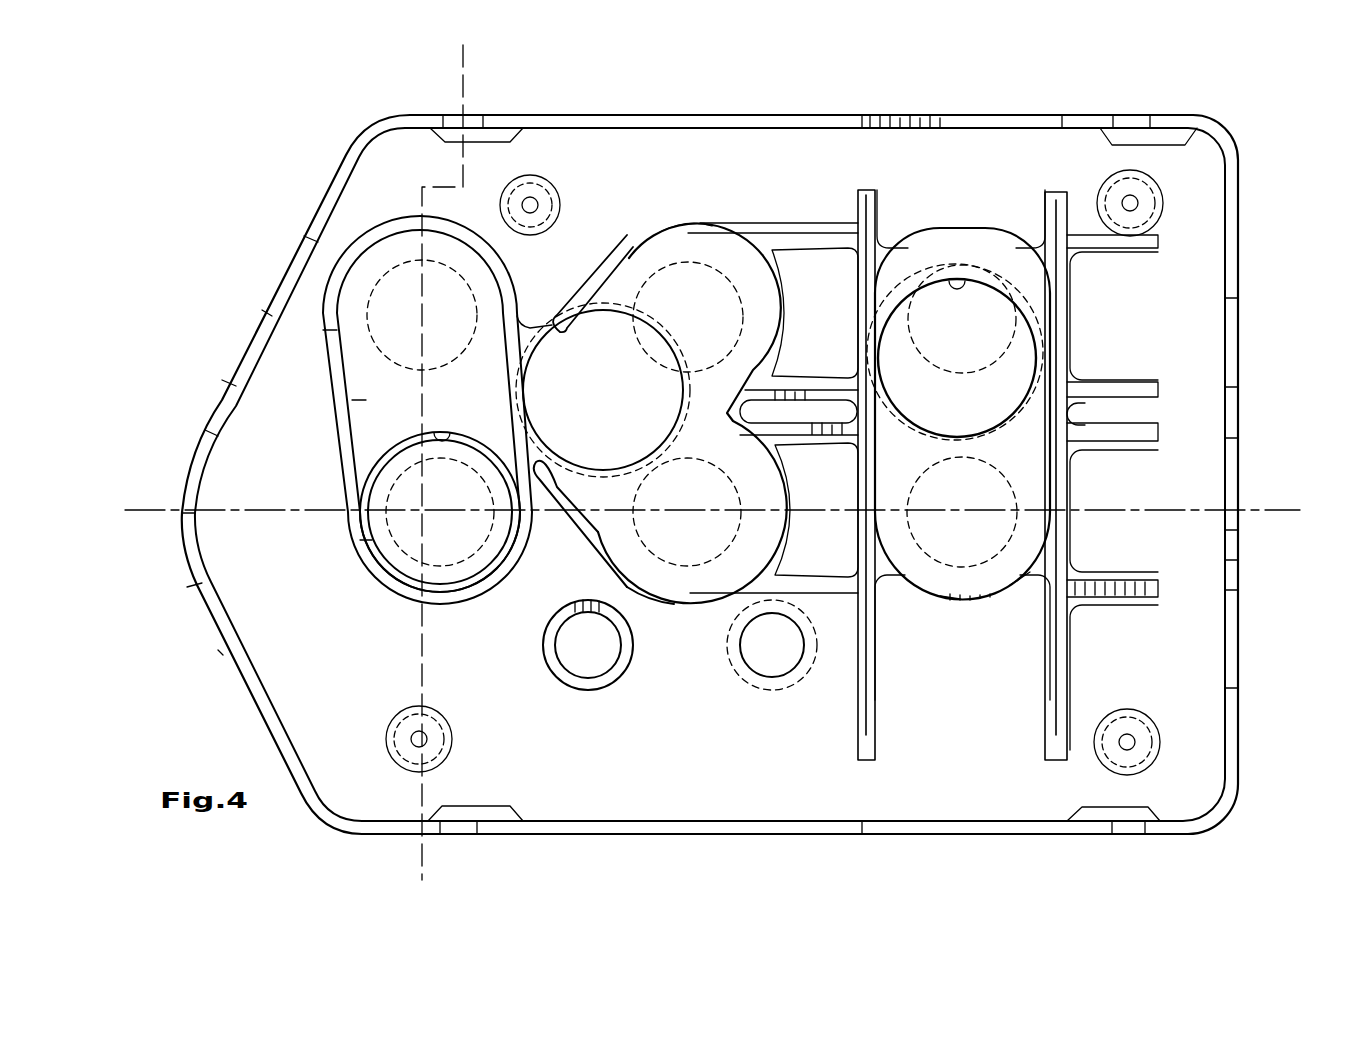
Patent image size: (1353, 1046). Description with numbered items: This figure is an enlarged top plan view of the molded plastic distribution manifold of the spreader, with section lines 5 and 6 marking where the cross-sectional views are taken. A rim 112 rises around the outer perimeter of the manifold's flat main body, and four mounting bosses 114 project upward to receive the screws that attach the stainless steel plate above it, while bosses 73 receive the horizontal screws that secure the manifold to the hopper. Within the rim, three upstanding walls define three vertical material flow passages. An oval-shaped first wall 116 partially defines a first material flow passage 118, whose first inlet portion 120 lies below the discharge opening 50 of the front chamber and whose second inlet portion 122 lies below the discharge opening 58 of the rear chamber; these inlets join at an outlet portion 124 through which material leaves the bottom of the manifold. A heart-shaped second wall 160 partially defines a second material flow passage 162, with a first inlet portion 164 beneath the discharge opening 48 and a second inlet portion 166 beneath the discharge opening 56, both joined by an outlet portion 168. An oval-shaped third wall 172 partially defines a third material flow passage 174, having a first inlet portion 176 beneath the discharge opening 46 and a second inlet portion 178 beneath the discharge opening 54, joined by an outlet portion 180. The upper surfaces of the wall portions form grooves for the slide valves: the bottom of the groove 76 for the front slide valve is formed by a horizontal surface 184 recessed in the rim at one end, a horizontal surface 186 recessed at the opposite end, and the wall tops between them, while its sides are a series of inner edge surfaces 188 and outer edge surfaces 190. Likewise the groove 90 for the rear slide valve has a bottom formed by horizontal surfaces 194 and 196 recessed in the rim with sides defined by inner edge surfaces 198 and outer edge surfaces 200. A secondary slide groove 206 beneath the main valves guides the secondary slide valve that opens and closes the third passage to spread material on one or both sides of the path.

The section line 5- 5 is at (145, 523).
The section line 6- 6 is at (463, 62).
The discharge opening 46 is at (924, 540).
The discharge opening 48 is at (681, 563).
The discharge opening 50 is at (488, 540).
The discharge opening 54 is at (920, 352).
The discharge opening 56 is at (681, 268).
The discharge opening 58 is at (390, 348).
The boss 73 is at (495, 135).
The groove 76 is at (1242, 552).
The groove 90 is at (1244, 318).
The rim 112 is at (220, 651).
The mounting boss 114 is at (545, 180).
The first wall 116 is at (330, 412).
The first material flow passage 118 is at (372, 416).
The first inlet portion 120 is at (383, 546).
The second inlet portion 122 is at (362, 378).
The outlet portion 124 is at (458, 428).
The second wall 160 is at (674, 610).
The second material flow passage 162 is at (612, 525).
The first inlet portion 164 is at (692, 580).
The second inlet portion 166 is at (633, 277).
The outlet portion 168 is at (580, 330).
The third wall 172 is at (900, 600).
The third material flow passage 174 is at (950, 600).
The first inlet portion 176 is at (985, 580).
The second inlet portion 178 is at (926, 258).
The outlet portion 180 is at (975, 280).
The horizontal surface 184 is at (1232, 530).
The horizontal surface 186 is at (186, 530).
The inner edge surface 188 is at (192, 438).
The outer edge surface 190 is at (197, 580).
The horizontal surface 194 is at (1237, 300).
The horizontal surface 196 is at (268, 312).
The inner edge surface 198 is at (232, 380).
The outer edge surface 200 is at (308, 238).
The secondary slide groove 206 is at (885, 215).